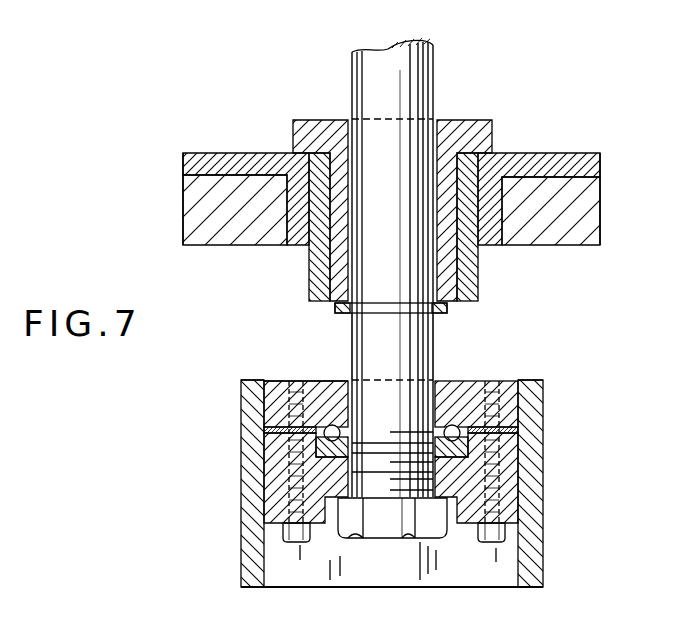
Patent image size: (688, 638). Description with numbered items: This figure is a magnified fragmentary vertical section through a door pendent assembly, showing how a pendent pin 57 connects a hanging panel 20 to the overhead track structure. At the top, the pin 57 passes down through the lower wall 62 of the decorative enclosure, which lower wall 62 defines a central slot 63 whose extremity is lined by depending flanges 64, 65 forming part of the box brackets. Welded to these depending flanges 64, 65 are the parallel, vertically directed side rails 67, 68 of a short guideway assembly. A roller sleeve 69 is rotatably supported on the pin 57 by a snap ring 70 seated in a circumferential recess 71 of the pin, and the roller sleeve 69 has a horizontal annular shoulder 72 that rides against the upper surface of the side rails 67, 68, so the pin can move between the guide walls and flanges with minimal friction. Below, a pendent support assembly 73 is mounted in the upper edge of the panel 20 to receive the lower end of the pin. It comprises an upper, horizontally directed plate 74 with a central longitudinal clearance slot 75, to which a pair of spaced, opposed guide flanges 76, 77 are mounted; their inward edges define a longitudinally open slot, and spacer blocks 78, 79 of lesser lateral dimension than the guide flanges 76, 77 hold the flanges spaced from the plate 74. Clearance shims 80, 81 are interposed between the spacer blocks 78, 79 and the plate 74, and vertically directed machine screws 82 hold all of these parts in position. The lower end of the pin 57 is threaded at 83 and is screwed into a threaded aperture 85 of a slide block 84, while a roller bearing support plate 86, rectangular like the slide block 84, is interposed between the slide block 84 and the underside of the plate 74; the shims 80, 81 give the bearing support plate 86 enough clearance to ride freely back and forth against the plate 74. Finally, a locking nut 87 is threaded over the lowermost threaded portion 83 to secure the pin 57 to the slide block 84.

The pendent pin 57 is at (405, 47).
The lower wall 62 is at (597, 226).
The central slot 63 is at (300, 264).
The depending flange 64 is at (290, 250).
The depending flange 65 is at (496, 246).
The side rail 67 is at (335, 306).
The side rail 68 is at (472, 305).
The roller sleeve 69 is at (465, 172).
The snap ring 70 is at (445, 313).
The recess 71 is at (358, 320).
The horizontal annular shoulder 72 is at (463, 120).
The pendent support assembly 73 is at (505, 380).
The upper plate 74 is at (262, 380).
The clearance slot 75 is at (347, 388).
The guide flange 76 is at (262, 580).
The guide flange 77 is at (520, 525).
The spacer block 78 is at (300, 490).
The spacer block 79 is at (508, 458).
The clearance shim 80 is at (515, 432).
The clearance shim 81 is at (300, 452).
The machine screws 82 is at (300, 545).
The threaded portion 83 is at (400, 500).
The slide block 84 is at (340, 523).
The threaded aperture 85 is at (420, 498).
The roller bearing support plate 86 is at (270, 510).
The locking nut 87 is at (383, 545).
The panel 20 is at (265, 432).